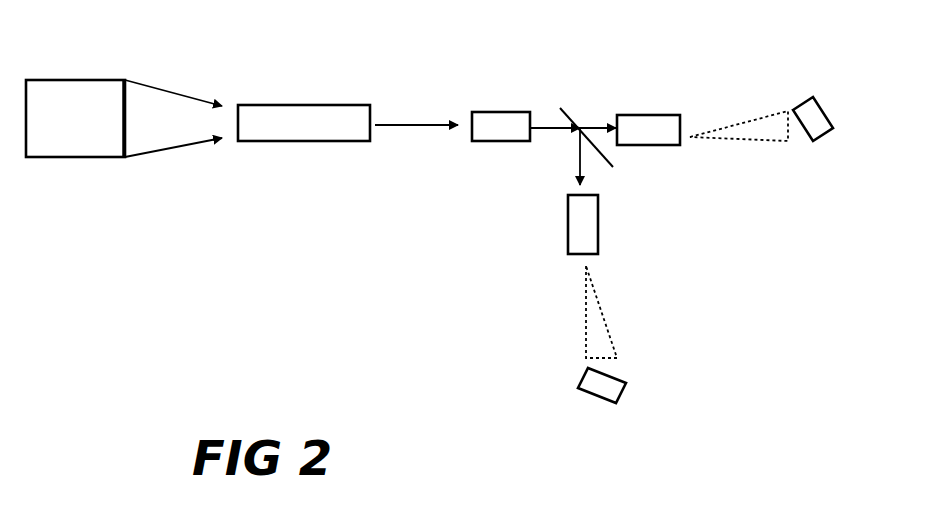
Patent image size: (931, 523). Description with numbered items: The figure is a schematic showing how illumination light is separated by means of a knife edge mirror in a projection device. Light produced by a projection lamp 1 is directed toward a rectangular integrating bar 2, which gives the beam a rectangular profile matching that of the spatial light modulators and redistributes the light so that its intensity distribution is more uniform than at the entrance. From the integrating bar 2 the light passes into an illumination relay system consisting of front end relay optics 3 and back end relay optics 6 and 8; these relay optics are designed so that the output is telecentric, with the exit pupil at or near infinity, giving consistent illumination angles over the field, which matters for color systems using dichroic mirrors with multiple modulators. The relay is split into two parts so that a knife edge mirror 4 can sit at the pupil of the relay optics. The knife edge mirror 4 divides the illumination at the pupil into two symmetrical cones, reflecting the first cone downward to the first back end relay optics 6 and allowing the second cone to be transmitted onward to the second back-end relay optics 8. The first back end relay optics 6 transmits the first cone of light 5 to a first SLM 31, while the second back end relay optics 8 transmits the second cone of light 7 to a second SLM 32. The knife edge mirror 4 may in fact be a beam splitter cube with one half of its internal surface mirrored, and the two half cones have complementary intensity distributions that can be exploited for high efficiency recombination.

The projection lamp 1 is at (82, 80).
The rectangular integrating bar 2 is at (297, 105).
The front end relay optics 3 is at (494, 110).
The knife edge mirror 4 is at (611, 165).
The first cone of light 5 is at (584, 305).
The first back end relay optics 6 is at (598, 232).
The second cone of light 7 is at (765, 117).
The second back-end relay optics 8 is at (650, 115).
The first SLM 31 is at (588, 393).
The second SLM 32 is at (818, 117).